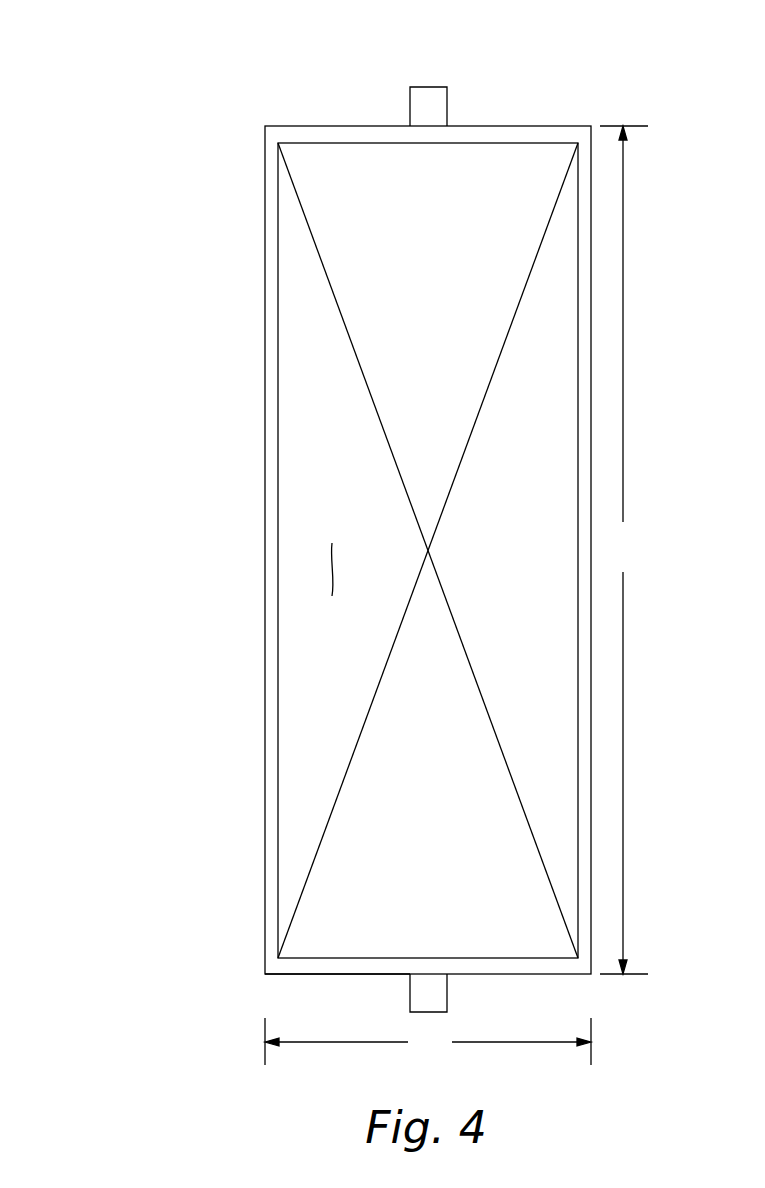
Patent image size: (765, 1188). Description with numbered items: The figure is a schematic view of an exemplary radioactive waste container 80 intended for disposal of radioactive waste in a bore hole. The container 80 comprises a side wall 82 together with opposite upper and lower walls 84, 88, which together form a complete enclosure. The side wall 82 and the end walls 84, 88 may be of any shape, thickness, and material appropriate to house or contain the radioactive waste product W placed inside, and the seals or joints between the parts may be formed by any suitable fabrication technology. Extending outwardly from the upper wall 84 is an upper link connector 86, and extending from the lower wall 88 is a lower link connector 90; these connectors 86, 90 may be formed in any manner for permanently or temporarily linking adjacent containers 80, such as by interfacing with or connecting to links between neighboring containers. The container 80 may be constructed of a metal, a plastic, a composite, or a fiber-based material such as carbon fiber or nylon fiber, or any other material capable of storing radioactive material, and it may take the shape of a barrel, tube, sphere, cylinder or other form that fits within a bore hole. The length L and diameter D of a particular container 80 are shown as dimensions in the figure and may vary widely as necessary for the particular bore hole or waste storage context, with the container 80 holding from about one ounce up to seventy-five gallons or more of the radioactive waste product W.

The radioactive waste container 80 is at (361, 515).
The side wall 82 is at (264, 349).
The upper wall 84 is at (323, 126).
The upper link connector 86 is at (428, 87).
The lower wall 88 is at (338, 974).
The lower link connector 90 is at (447, 985).
The radioactive waste product W is at (332, 569).
The length L is at (624, 550).
The diameter D is at (428, 1041).